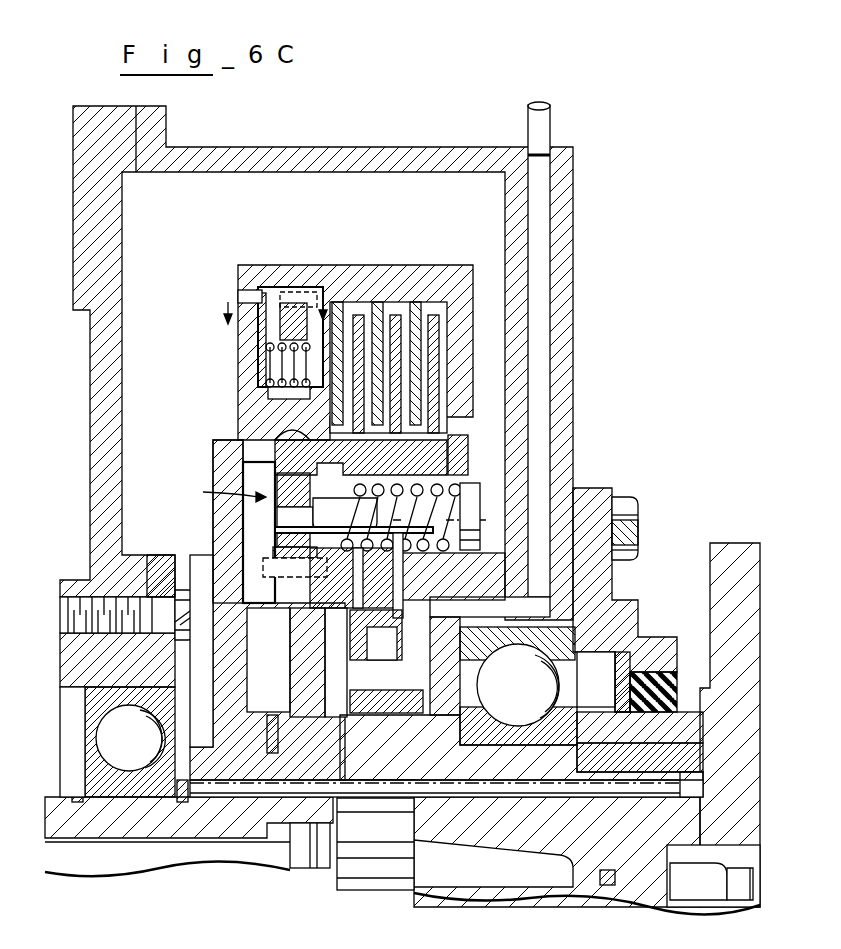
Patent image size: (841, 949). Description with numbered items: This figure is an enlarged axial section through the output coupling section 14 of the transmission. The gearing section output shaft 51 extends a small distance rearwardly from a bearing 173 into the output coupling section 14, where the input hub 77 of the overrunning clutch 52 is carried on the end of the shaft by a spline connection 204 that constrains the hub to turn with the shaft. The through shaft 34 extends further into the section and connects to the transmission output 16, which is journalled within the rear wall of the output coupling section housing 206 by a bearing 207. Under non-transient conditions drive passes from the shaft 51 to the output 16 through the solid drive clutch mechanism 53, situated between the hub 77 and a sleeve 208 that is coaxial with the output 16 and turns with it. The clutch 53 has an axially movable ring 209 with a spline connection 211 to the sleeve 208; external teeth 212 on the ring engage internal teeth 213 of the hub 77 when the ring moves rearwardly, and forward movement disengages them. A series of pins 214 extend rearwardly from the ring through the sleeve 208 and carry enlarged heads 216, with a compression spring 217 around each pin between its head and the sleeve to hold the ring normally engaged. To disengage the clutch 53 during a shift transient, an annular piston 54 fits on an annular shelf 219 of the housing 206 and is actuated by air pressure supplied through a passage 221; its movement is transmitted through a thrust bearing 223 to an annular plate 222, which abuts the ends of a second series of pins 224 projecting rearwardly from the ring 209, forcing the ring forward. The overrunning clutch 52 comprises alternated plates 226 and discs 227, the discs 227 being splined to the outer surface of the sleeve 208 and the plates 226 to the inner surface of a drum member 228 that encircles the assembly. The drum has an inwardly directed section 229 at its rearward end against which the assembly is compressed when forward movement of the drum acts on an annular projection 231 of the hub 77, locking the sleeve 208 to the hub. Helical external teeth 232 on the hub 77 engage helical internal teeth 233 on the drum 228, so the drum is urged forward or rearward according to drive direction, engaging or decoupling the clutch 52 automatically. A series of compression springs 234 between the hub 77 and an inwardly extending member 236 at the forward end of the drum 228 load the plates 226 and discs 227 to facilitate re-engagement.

The output coupling section 14 is at (324, 148).
The transmission output 16 is at (752, 780).
The through shaft 34 is at (200, 867).
The gearing section output shaft 51 is at (120, 827).
The overrunning clutch 52 is at (361, 255).
The solid drive clutch mechanism 53 is at (219, 494).
The annular piston 54 is at (402, 686).
The input hub 77 is at (223, 462).
The bearing 173 is at (83, 703).
The spline connection 204 is at (255, 828).
The output coupling section housing 206 is at (575, 345).
The bearing 207 is at (533, 677).
The sleeve 208 is at (288, 612).
The axially movable ring 209 is at (277, 545).
The spline connection 211 is at (262, 566).
The external teeth 212 is at (243, 462).
The internal teeth 213 is at (290, 430).
The pins 214 is at (414, 517).
The enlarged heads 216 is at (468, 495).
The compression spring 217 is at (452, 458).
The annular shelf 219 is at (492, 583).
The passage 221 is at (549, 587).
The annular plate 222 is at (290, 642).
The thrust bearing 223 is at (290, 693).
The second series of pins 224 is at (365, 522).
The plates 226 is at (422, 322).
The discs 227 is at (363, 322).
The drum member 228 is at (294, 268).
The inwardly directed section 229 is at (468, 288).
The annular projection 231 is at (290, 328).
The external teeth 232 is at (285, 292).
The internal teeth 233 is at (250, 290).
The compression springs 234 is at (270, 367).
The inwardly extending member 236 is at (256, 333).